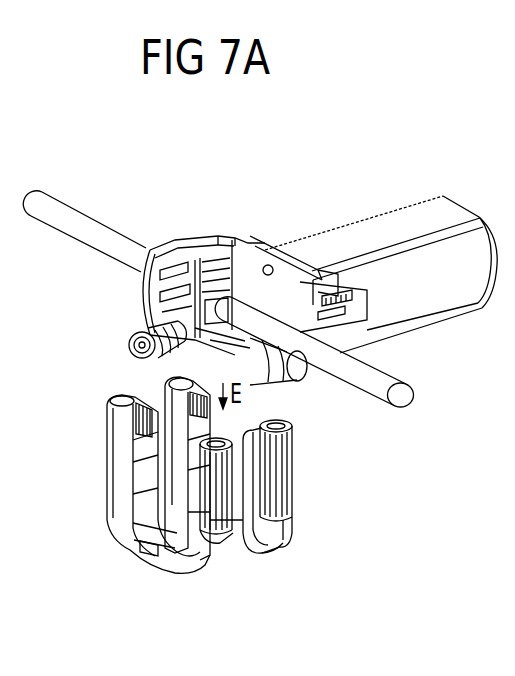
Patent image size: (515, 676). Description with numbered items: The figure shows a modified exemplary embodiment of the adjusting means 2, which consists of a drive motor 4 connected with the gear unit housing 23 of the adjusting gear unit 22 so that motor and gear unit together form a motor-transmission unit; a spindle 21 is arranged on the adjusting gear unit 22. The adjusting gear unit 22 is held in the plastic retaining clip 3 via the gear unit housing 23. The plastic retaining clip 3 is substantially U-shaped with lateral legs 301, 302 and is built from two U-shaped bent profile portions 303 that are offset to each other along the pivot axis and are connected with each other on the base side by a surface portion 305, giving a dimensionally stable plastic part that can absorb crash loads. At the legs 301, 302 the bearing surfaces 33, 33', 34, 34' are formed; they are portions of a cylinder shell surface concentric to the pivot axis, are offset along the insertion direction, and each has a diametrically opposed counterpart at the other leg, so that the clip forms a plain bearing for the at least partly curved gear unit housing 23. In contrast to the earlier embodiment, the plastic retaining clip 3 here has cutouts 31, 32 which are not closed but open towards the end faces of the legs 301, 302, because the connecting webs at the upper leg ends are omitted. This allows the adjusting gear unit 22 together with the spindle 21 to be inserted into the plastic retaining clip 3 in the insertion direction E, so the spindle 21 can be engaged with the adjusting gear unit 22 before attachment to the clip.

The adjusting means 2 is at (305, 177).
The drive motor 4 is at (377, 228).
The spindle 21 is at (80, 222).
The adjusting gear unit 22 is at (218, 231).
The gear unit housing 23 is at (180, 243).
The plastic retaining clip 3 is at (163, 555).
The cutout 31 is at (255, 495).
The cutout 32 is at (173, 418).
The bearing surface 33 is at (170, 570).
The bearing surface 33' is at (186, 594).
The bearing surface 34 is at (103, 444).
The bearing surface 34' is at (100, 479).
The leg 301 is at (197, 535).
The leg 302 is at (118, 497).
The profile portion 303 is at (258, 552).
The surface portion 305 is at (140, 550).